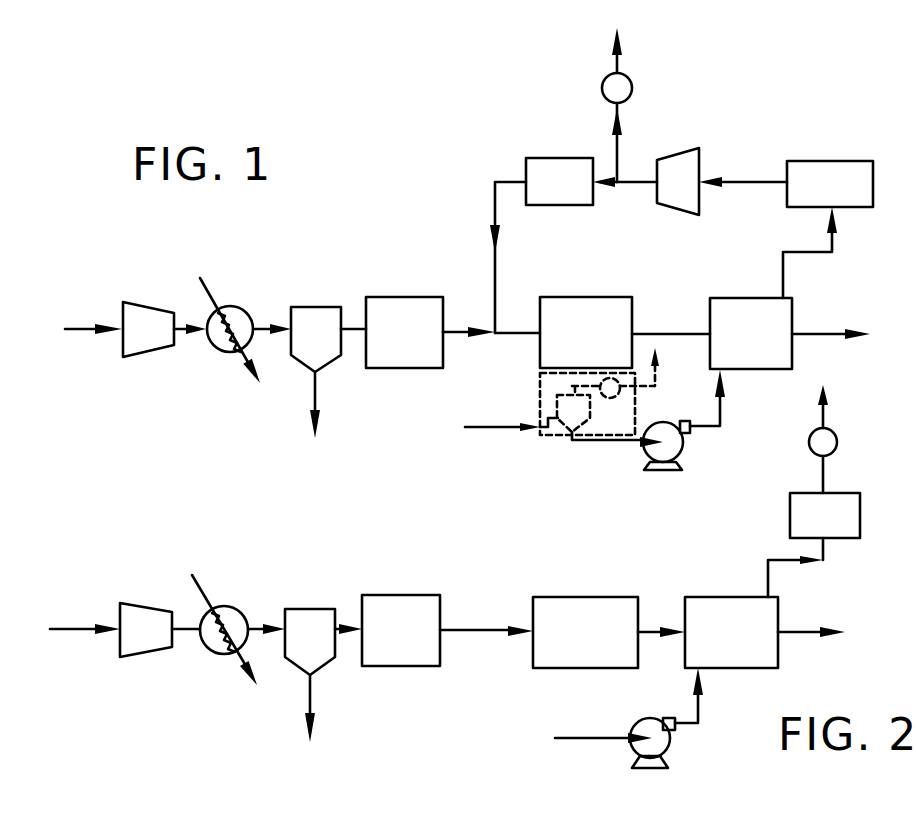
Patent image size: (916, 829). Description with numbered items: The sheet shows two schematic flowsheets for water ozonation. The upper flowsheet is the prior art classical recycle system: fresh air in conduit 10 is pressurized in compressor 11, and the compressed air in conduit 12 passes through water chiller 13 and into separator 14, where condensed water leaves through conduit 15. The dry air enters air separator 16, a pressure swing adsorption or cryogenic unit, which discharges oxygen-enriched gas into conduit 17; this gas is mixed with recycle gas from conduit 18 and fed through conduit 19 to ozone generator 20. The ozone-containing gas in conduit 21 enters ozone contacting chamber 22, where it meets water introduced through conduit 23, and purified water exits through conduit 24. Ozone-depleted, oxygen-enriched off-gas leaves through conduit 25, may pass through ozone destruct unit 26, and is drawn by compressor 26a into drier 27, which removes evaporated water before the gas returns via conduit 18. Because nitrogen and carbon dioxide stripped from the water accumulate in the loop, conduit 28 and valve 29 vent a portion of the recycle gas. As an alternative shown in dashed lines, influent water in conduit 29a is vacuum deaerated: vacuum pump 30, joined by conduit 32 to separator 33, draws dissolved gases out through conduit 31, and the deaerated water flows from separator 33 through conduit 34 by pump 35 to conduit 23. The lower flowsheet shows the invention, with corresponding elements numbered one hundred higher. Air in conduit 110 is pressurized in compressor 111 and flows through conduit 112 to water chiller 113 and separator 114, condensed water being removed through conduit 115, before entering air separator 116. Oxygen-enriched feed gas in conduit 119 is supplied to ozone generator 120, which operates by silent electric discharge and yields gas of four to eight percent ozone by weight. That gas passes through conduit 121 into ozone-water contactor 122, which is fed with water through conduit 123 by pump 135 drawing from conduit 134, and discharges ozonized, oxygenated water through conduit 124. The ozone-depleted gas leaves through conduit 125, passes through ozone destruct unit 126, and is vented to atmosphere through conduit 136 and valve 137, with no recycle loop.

In FIG. 1, the conduit 10 is at (93, 330).
In FIG. 1, the compressor 11 is at (150, 353).
In FIG. 1, the conduit 12 is at (178, 317).
In FIG. 1, the water chiller 13 is at (214, 343).
In FIG. 1, the separator 14 is at (341, 352).
In FIG. 1, the conduit 15 is at (311, 384).
In FIG. 1, the air separator 16 is at (388, 368).
In FIG. 1, the conduit 17 is at (456, 330).
In FIG. 1, the conduit 18 is at (497, 271).
In FIG. 1, the conduit 19 is at (505, 335).
In FIG. 1, the ozone generator 20 is at (578, 297).
In FIG. 1, the conduit 21 is at (668, 306).
In FIG. 1, the ozone contacting chamber 22 is at (759, 297).
In FIG. 1, the conduit 23 is at (722, 412).
In FIG. 1, the conduit 24 is at (812, 332).
In FIG. 1, the conduit 25 is at (786, 287).
In FIG. 1, the ozone destruct unit 26 is at (824, 138).
In FIG. 1, the compressor 26a is at (681, 143).
In FIG. 1, the drier 27 is at (559, 133).
In FIG. 1, the conduit 28 is at (627, 137).
In FIG. 1, the valve 29 is at (642, 68).
In FIG. 1, the conduit 29a is at (524, 430).
In FIG. 1, the vacuum pump 30 is at (622, 390).
In FIG. 1, the conduit 31 is at (657, 370).
In FIG. 1, the conduit 32 is at (572, 386).
In FIG. 1, the separator 33 is at (557, 409).
In FIG. 1, the conduit 34 is at (609, 441).
In FIG. 1, the pump 35 is at (685, 447).
In FIG. 2, the conduit 110 is at (82, 632).
In FIG. 2, the compressor 111 is at (142, 603).
In FIG. 2, the conduit 112 is at (181, 633).
In FIG. 2, the water chiller 113 is at (231, 607).
In FIG. 2, the separator 114 is at (302, 609).
In FIG. 2, the conduit 115 is at (312, 701).
In FIG. 2, the air separator 116 is at (392, 595).
In FIG. 2, the conduit 119 is at (471, 630).
In FIG. 2, the ozone generator 120 is at (590, 597).
In FIG. 2, the conduit 121 is at (658, 630).
In FIG. 2, the ozone-water contactor 122 is at (708, 597).
In FIG. 2, the pump discharge line 123 is at (700, 702).
In FIG. 2, the conduit 124 is at (792, 630).
In FIG. 1, the conduit 125 is at (768, 578).
In FIG. 1, the ozone destruct unit 126 is at (790, 514).
In FIG. 2, the pump inlet line 134 is at (599, 735).
In FIG. 2, the pump 135 is at (667, 748).
In FIG. 1, the conduit 136 is at (826, 466).
In FIG. 1, the valve 137 is at (837, 437).